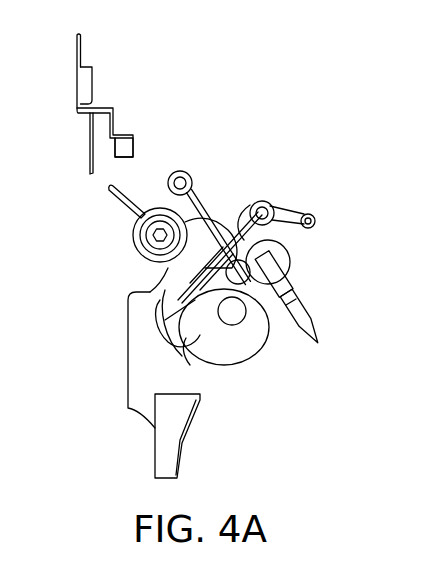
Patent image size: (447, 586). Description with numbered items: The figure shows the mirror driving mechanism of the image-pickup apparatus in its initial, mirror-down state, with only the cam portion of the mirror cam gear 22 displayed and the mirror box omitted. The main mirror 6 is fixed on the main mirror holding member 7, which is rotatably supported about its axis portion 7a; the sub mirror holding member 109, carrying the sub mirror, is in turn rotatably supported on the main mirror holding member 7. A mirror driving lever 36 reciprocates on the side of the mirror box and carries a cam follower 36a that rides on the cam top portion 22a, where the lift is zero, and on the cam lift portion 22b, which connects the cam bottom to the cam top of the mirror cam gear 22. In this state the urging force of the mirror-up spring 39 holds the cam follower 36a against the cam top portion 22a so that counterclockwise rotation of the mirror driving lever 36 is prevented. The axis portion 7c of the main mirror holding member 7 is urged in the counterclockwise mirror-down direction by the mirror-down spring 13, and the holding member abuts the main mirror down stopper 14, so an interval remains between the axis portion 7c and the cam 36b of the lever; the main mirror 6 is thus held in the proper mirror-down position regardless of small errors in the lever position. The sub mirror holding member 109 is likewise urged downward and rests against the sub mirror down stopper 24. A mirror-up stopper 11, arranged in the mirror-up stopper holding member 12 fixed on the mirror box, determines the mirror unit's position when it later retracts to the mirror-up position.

The main mirror 6 is at (210, 270).
The main mirror holding member 7 is at (289, 207).
The axis portion 7a is at (304, 226).
The axis portion 7c is at (270, 207).
The mirror-up stopper 11 is at (124, 148).
The mirror-up stopper holding member 12 is at (88, 73).
The mirror-down spring 13 is at (203, 196).
The main mirror down stopper 14 is at (167, 338).
The mirror cam gear 22 is at (228, 335).
The cam top portion 22a is at (190, 340).
The cam lift portion 22b is at (267, 332).
The sub mirror down stopper 24 is at (313, 293).
The mirror driving lever 36 is at (147, 357).
The cam follower 36a is at (178, 307).
The cam 36b is at (293, 207).
The mirror-up spring 39 is at (130, 202).
The sub mirror holding member 109 is at (316, 316).